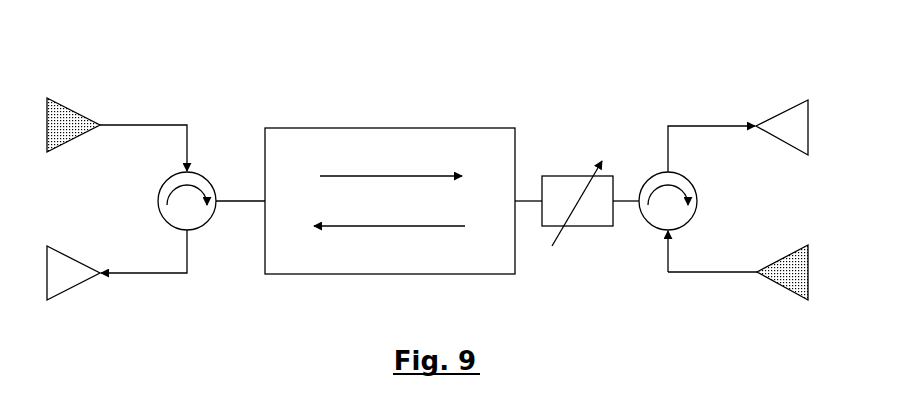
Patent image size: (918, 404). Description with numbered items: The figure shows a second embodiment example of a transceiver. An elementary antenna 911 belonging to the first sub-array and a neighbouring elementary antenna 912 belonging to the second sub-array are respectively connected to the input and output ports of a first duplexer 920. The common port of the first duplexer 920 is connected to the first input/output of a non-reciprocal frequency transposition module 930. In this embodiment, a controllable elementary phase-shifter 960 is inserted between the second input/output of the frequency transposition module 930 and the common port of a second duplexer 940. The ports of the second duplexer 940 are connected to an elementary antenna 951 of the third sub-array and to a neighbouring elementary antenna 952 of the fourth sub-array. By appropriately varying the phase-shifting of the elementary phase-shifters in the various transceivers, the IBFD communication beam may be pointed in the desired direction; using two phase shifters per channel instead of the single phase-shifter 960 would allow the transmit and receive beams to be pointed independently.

The elementary antenna 911 is at (73, 110).
The neighbouring elementary antenna 912 is at (68, 290).
The first duplexer 920 is at (210, 177).
The non-reciprocal frequency transposition module 930 is at (433, 127).
The second duplexer 940 is at (648, 177).
The elementary antenna 951 is at (782, 110).
The neighbouring elementary antenna 952 is at (783, 285).
The controllable elementary phase-shifter 960 is at (563, 176).